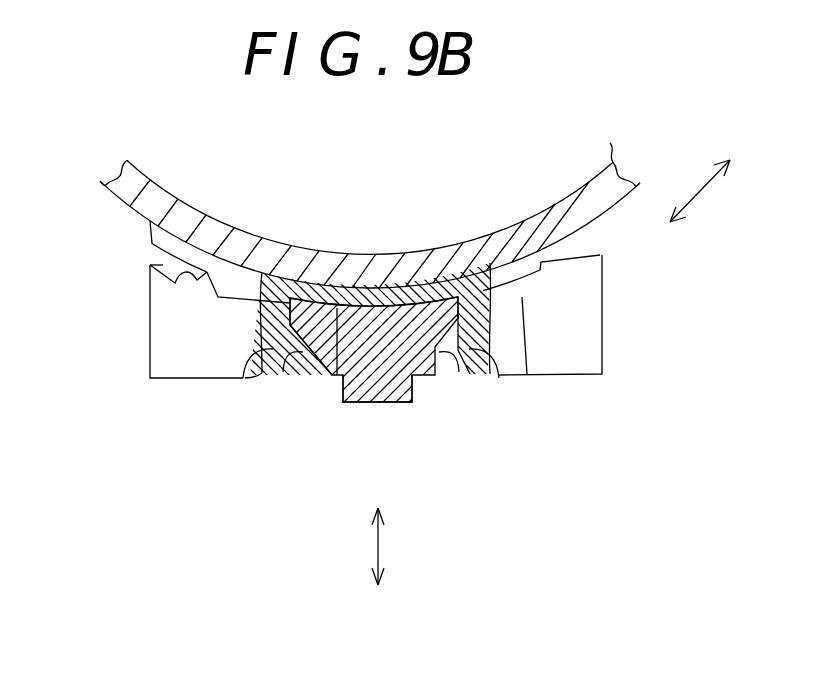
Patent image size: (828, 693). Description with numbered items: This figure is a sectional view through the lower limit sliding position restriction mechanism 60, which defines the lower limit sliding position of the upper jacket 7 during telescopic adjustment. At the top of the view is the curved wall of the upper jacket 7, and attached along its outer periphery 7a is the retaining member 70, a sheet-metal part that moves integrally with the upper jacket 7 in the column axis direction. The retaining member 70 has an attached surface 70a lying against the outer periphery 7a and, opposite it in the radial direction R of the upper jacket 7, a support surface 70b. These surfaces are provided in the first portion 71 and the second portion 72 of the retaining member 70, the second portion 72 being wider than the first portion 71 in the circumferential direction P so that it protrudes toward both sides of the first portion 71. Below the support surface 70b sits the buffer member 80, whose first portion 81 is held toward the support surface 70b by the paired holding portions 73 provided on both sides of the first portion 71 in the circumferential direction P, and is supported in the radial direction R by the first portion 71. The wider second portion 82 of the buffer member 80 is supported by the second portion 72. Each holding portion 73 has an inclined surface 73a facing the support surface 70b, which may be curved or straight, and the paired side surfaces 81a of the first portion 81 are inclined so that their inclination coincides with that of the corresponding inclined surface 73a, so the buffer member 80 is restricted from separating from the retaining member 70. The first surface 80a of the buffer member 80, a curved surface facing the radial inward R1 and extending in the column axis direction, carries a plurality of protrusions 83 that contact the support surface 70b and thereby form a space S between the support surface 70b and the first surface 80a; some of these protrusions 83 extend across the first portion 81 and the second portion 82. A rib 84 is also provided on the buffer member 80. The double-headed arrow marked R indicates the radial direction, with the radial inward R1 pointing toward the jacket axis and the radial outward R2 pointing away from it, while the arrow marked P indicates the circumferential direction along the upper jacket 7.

The upper jacket 7 is at (630, 193).
The outer periphery 7a is at (113, 190).
The lower limit sliding position restriction mechanism 60 is at (620, 357).
The retaining member 70 is at (407, 322).
The attached surface 70a is at (312, 285).
The support surface 70b is at (322, 352).
The first portion 71 is at (390, 278).
The second portion 72 is at (165, 247).
The paired holding portions 73 is at (277, 363).
The inclined surface 73a is at (310, 387).
The buffer member 80 is at (170, 383).
The first surface 80a is at (580, 267).
The first portion 81 is at (388, 400).
The paired side surfaces 81a is at (277, 343).
The second portion 82 is at (170, 356).
The protrusions 83 is at (223, 250).
The rib 84 is at (383, 383).
The space S is at (150, 310).
The circumferential direction P is at (705, 193).
The radial direction R is at (380, 548).
The radial inward R1 is at (374, 494).
The radial outward R2 is at (374, 601).